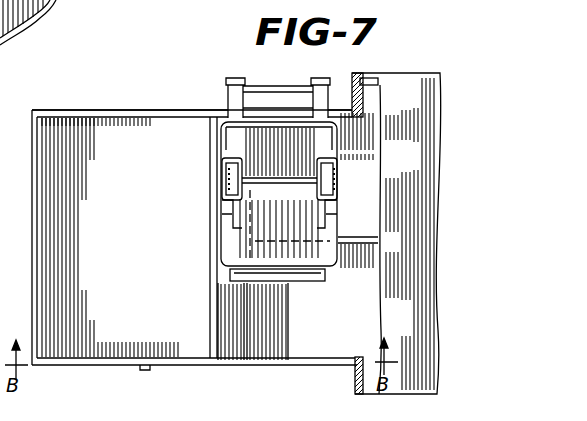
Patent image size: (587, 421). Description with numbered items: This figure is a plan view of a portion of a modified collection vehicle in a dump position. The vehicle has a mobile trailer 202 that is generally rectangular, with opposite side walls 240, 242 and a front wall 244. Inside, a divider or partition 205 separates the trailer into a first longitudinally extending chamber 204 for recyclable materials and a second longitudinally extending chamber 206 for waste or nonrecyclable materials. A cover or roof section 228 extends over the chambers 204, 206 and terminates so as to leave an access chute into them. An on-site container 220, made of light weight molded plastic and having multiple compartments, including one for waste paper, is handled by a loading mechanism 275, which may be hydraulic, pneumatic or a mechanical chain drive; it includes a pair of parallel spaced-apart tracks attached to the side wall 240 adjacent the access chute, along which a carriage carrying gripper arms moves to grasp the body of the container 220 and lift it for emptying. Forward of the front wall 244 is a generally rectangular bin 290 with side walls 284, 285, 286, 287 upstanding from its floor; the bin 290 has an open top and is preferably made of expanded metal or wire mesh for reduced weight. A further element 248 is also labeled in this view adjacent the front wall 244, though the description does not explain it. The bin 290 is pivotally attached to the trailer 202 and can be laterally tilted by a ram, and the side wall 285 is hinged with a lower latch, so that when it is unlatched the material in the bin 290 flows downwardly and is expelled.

The mobile trailer 202 is at (377, 88).
The first longitudinally extending chamber 204 is at (368, 167).
The divider or partition 205 is at (348, 255).
The second longitudinally extending chamber 206 is at (332, 331).
The on-site container 220 is at (222, 134).
The cover or roof section 228 is at (416, 329).
The side wall 240 is at (362, 76).
The side wall 242 is at (372, 395).
The front wall 244 is at (261, 340).
The support column 248 is at (230, 330).
The loading mechanism 275 is at (270, 80).
The side wall 284 is at (211, 254).
The side wall 285 is at (90, 120).
The side wall 286 is at (42, 214).
The side wall 287 is at (118, 353).
The bin 290 is at (157, 204).